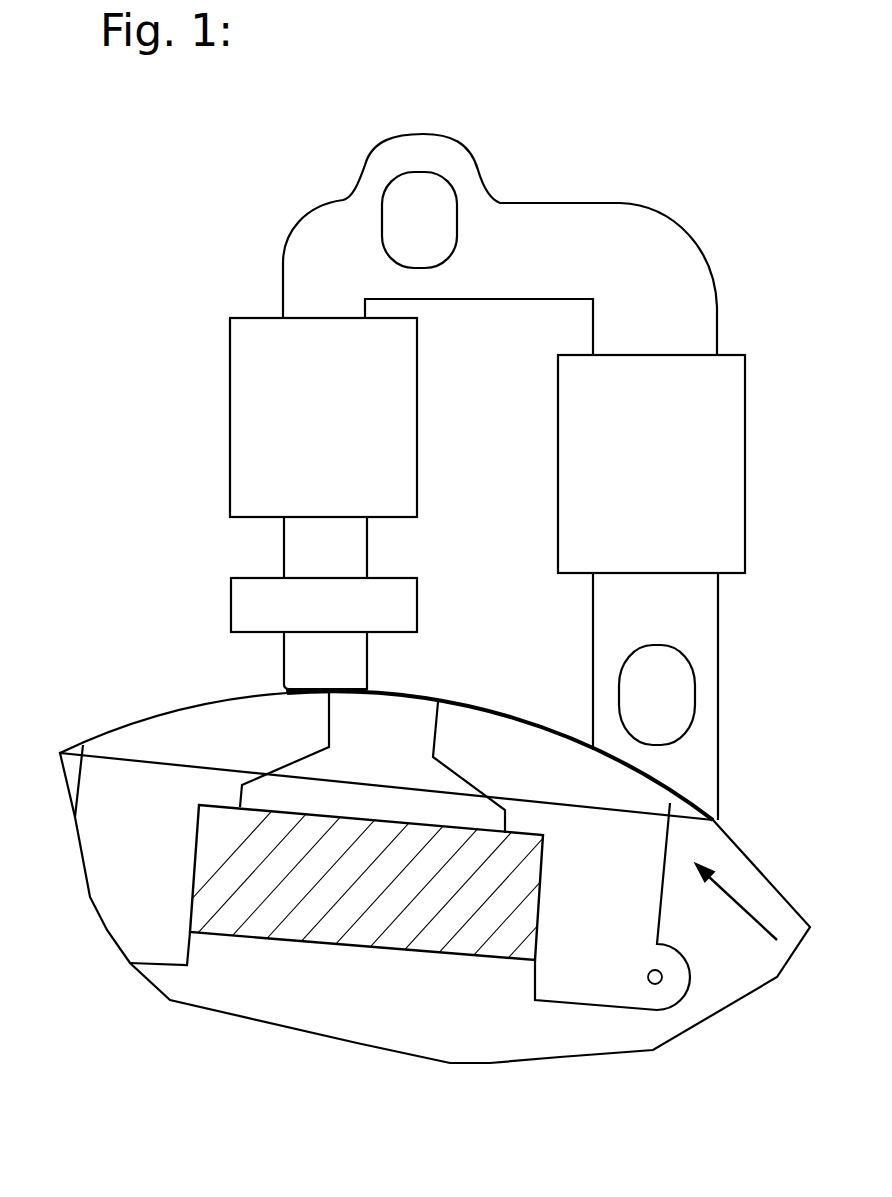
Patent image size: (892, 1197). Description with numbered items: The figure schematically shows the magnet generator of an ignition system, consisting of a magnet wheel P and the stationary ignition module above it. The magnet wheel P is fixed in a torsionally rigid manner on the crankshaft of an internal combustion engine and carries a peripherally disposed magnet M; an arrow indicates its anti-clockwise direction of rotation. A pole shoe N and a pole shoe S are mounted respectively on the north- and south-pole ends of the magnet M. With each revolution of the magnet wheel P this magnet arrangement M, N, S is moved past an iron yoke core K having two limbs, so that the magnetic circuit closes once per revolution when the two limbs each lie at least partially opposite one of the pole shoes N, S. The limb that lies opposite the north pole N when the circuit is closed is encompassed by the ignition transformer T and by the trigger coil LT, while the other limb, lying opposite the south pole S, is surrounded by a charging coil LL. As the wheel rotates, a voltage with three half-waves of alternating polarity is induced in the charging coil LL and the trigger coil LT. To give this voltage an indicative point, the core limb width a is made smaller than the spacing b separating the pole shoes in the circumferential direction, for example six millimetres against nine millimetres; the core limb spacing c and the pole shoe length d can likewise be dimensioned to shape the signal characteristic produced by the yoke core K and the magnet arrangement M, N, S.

The iron yoke core K is at (342, 232).
The ignition transformer T is at (258, 347).
The trigger coil LT is at (258, 607).
The charging coil LL is at (697, 458).
The magnet wheel P is at (230, 972).
The magnet M is at (310, 910).
The north pole shoe N is at (224, 767).
The south pole shoe S is at (561, 856).
The core limb width a is at (367, 660).
The pole shoe spacing b is at (433, 742).
The core limb spacing c is at (595, 748).
The pole shoe length d is at (670, 803).